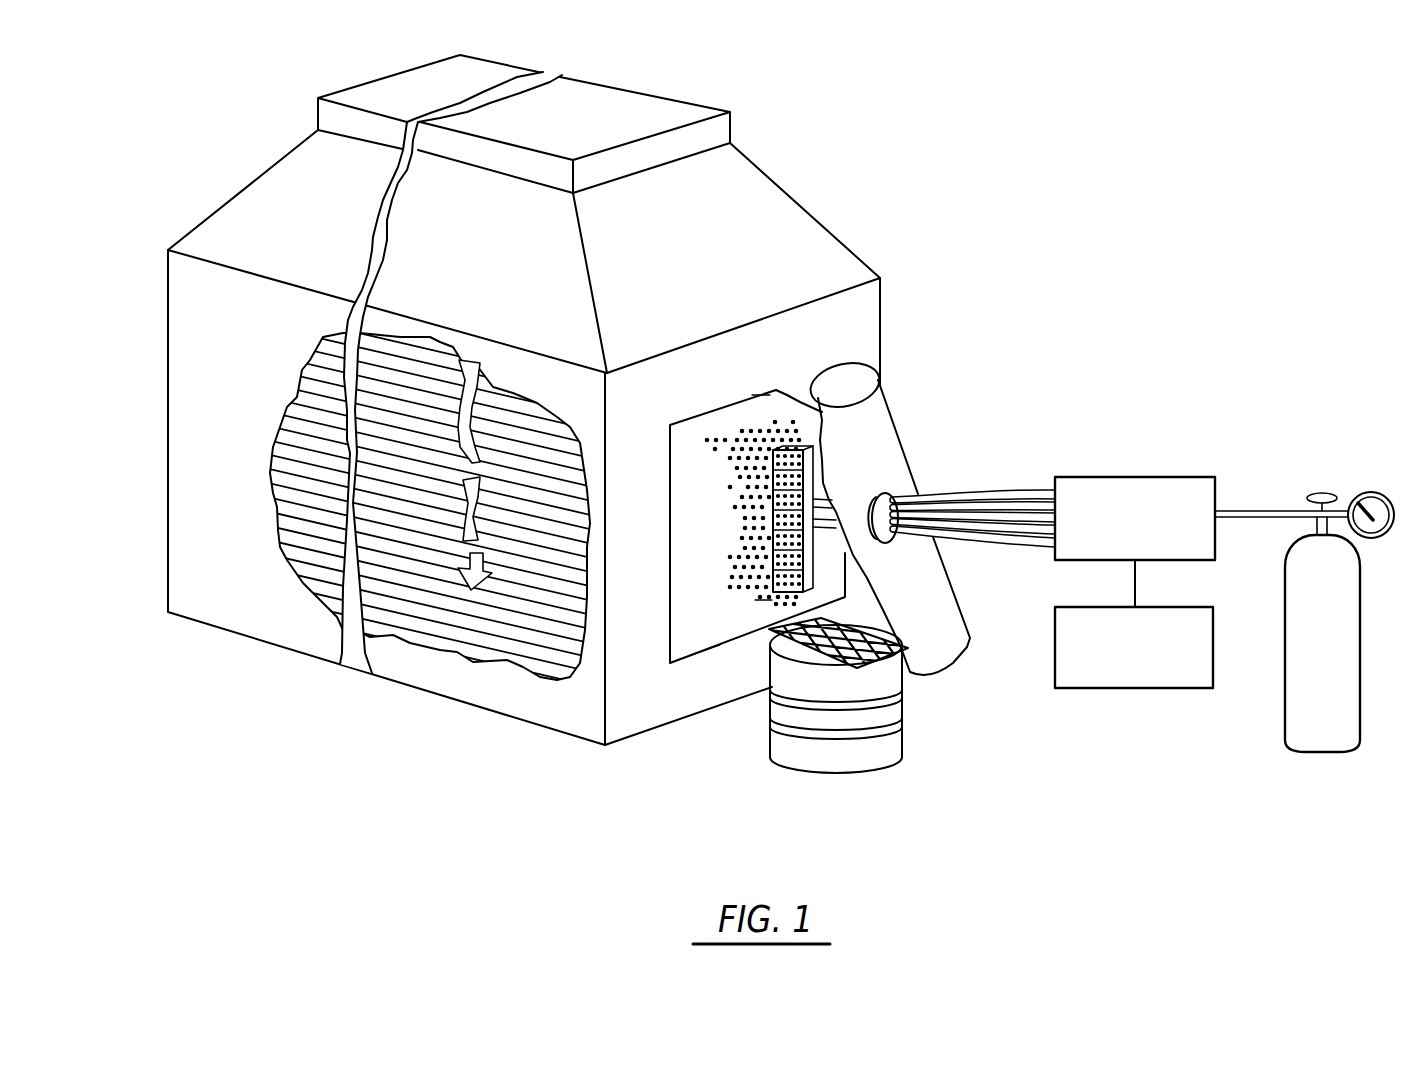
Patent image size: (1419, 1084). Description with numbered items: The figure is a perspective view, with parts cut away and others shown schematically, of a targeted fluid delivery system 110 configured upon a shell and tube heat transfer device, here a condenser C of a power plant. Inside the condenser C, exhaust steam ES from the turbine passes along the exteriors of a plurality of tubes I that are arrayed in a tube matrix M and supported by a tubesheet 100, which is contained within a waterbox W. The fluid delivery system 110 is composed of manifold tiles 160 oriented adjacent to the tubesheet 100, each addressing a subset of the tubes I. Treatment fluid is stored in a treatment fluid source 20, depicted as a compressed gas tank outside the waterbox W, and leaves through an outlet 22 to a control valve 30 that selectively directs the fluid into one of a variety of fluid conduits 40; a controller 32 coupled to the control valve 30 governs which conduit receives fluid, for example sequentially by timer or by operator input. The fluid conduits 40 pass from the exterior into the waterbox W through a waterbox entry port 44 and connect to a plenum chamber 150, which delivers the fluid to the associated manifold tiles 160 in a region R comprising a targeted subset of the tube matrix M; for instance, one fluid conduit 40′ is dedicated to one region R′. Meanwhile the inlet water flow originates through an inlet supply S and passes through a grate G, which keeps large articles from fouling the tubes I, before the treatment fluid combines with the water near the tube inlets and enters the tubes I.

The fluid delivery system 110 is at (979, 186).
The condenser C is at (787, 188).
The tubes I is at (512, 650).
The exhaust steam ES is at (468, 590).
The tube matrix M is at (735, 614).
The tubesheet 100 is at (678, 670).
The region R is at (705, 472).
The region R′ is at (772, 410).
The manifold tile 160 is at (815, 457).
The plenum chamber 150 is at (823, 497).
The fluid conduit 40′ is at (830, 507).
The waterbox W is at (875, 450).
The waterbox entry port 44 is at (887, 500).
The fluid conduits 40 is at (1040, 508).
The control valve 30 is at (1150, 531).
The controller 32 is at (1150, 662).
The outlet 22 is at (1248, 510).
The treatment fluid source 20 is at (1342, 646).
The inlet supply S is at (902, 748).
The grate G is at (887, 663).